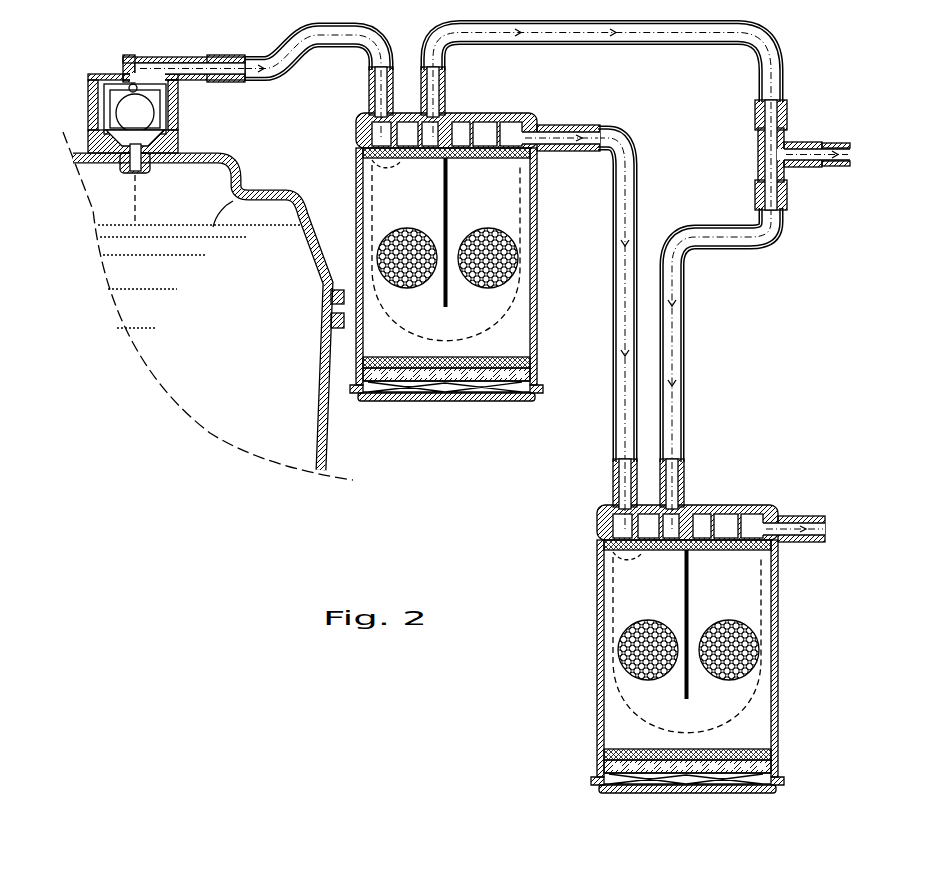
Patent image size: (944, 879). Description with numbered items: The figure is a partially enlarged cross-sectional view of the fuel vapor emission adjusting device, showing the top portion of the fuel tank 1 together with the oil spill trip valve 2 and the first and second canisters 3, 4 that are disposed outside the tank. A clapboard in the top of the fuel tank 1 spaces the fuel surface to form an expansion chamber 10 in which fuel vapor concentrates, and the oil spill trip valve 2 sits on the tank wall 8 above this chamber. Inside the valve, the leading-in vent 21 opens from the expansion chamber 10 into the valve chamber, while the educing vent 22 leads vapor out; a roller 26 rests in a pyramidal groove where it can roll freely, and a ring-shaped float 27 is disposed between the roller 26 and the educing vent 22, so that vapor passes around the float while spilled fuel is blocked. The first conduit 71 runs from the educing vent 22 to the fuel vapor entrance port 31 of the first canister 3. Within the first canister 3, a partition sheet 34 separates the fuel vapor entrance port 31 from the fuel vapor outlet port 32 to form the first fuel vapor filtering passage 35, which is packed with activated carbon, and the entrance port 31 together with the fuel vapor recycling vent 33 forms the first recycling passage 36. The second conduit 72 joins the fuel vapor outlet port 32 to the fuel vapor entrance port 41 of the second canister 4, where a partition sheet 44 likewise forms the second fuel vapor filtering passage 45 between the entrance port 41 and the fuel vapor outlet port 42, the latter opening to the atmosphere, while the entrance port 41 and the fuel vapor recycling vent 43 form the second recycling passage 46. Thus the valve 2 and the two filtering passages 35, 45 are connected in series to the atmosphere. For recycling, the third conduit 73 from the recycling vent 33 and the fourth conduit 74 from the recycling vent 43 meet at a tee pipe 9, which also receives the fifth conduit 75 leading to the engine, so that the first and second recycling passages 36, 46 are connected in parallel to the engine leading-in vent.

The fuel tank 1 is at (232, 166).
The oil spill trip valve 2 is at (159, 93).
The first canister 3 is at (449, 234).
The second canister 4 is at (688, 626).
The tank wall flange bend 8 is at (240, 197).
The tee pipe 9 is at (758, 149).
The expansion chamber 10 is at (113, 203).
The leading-in vent 21 is at (176, 150).
The educing vent 22 is at (136, 62).
The roller 26 is at (150, 112).
The ring-shaped float 27 is at (108, 72).
The fuel vapor entrance port 31 is at (368, 97).
The fuel vapor outlet port 32 is at (573, 151).
The fuel vapor recycling vent 33 is at (430, 107).
The partition sheet 34 is at (448, 204).
The first fuel vapor filtering passage 35 is at (496, 328).
The first recycling passage 36 is at (398, 160).
The fuel vapor entrance port 41 is at (620, 496).
The fuel vapor outlet port 42 is at (805, 530).
The fuel vapor recycling vent 43 is at (668, 500).
The partition sheet 44 is at (690, 595).
The second fuel vapor filtering passage 45 is at (737, 718).
The second recycling passage 46 is at (647, 549).
The first conduit 71 is at (347, 57).
The second conduit 72 is at (640, 192).
The third conduit 73 is at (757, 50).
The fourth conduit 74 is at (685, 290).
The fifth conduit 75 is at (837, 142).